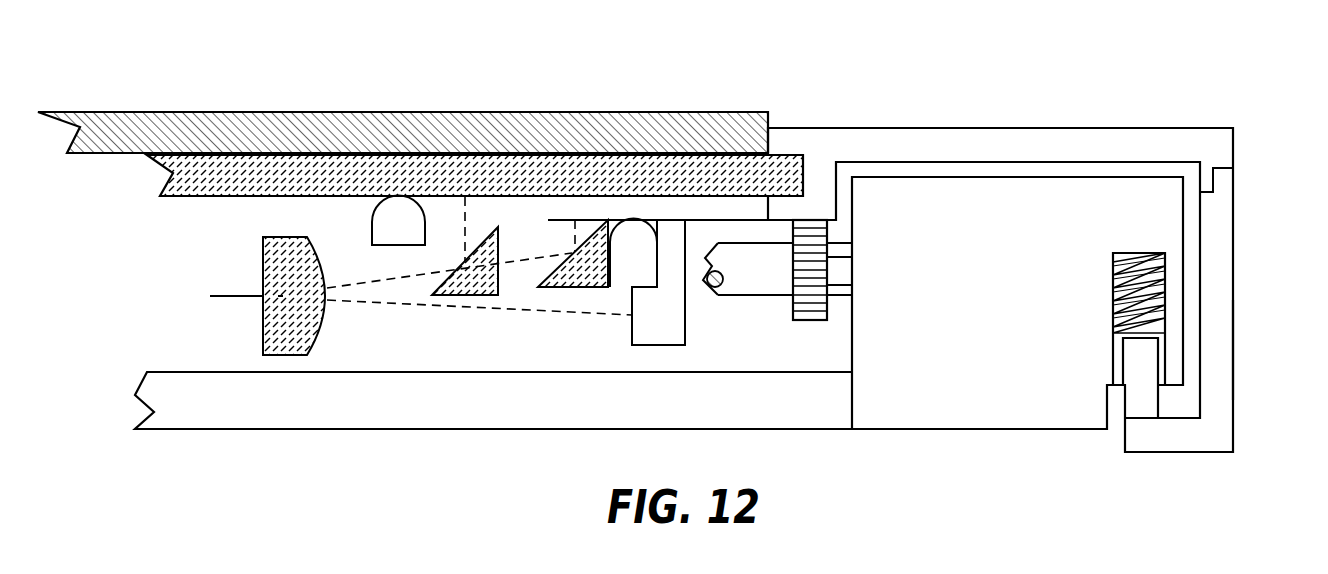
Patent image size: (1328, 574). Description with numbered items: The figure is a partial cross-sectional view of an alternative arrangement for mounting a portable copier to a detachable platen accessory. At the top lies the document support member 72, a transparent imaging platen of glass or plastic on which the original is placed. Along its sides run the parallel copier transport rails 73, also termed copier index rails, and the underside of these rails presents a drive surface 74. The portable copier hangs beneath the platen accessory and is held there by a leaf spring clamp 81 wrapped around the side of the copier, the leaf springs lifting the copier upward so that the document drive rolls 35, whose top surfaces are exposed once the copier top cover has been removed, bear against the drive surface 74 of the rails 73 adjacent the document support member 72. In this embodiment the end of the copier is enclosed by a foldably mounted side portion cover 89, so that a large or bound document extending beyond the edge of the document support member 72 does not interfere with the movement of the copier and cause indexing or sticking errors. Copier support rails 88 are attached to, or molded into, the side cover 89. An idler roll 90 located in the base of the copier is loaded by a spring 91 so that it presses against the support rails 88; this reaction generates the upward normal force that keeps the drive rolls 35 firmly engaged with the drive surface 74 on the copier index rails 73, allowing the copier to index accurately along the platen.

The document support member 72 is at (505, 152).
The copier transport rails 73 is at (787, 140).
The drive surface 74 is at (834, 222).
The document drive rolls 35 is at (807, 322).
The leaf spring clamps 81 is at (1105, 128).
The copier support rails 88 is at (1142, 420).
The side portion cover 89 is at (1233, 347).
The idler roll 90 is at (1140, 362).
The spring 91 is at (1113, 292).